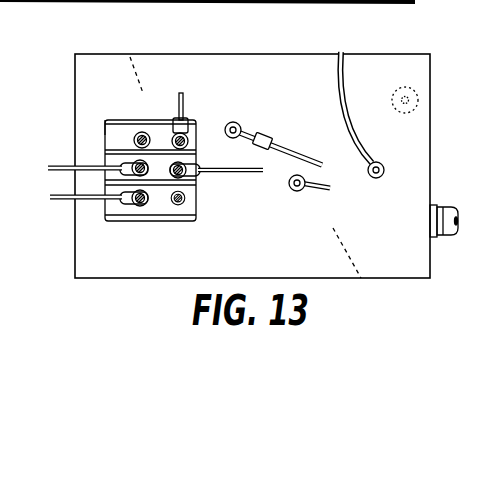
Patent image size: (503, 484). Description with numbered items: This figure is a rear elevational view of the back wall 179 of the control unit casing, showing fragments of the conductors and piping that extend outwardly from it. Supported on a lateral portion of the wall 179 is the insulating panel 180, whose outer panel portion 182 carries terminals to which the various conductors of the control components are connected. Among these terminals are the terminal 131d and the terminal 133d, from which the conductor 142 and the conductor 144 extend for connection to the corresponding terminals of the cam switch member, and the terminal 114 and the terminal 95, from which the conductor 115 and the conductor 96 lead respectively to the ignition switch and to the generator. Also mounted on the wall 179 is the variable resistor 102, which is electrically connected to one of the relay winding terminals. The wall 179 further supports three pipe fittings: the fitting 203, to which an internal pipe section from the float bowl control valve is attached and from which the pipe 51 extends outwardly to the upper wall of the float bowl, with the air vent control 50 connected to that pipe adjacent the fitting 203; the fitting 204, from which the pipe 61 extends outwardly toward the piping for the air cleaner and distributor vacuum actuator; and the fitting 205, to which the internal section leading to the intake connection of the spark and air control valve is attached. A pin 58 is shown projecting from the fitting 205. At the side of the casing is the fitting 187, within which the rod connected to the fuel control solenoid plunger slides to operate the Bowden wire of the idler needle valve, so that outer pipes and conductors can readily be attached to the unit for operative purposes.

The air vent control 50 is at (265, 138).
The pipe 51 is at (300, 150).
The pin 58 is at (327, 193).
The pipe 61 is at (358, 125).
The terminal 95 is at (149, 206).
The conductor 96 is at (62, 202).
The variable resistor 102 is at (419, 93).
The terminal 114 is at (150, 156).
The conductor 115 is at (62, 164).
The terminal 131d is at (199, 130).
The terminal 133d is at (194, 186).
The conductor 142 is at (185, 102).
The conductor 144 is at (229, 173).
The wall 179 is at (398, 280).
The insulating panel 180 is at (118, 221).
The outer panel portion 182 is at (107, 131).
The fitting 187 is at (452, 205).
The fitting 203 is at (238, 125).
The fitting 204 is at (371, 175).
The fitting 205 is at (297, 191).